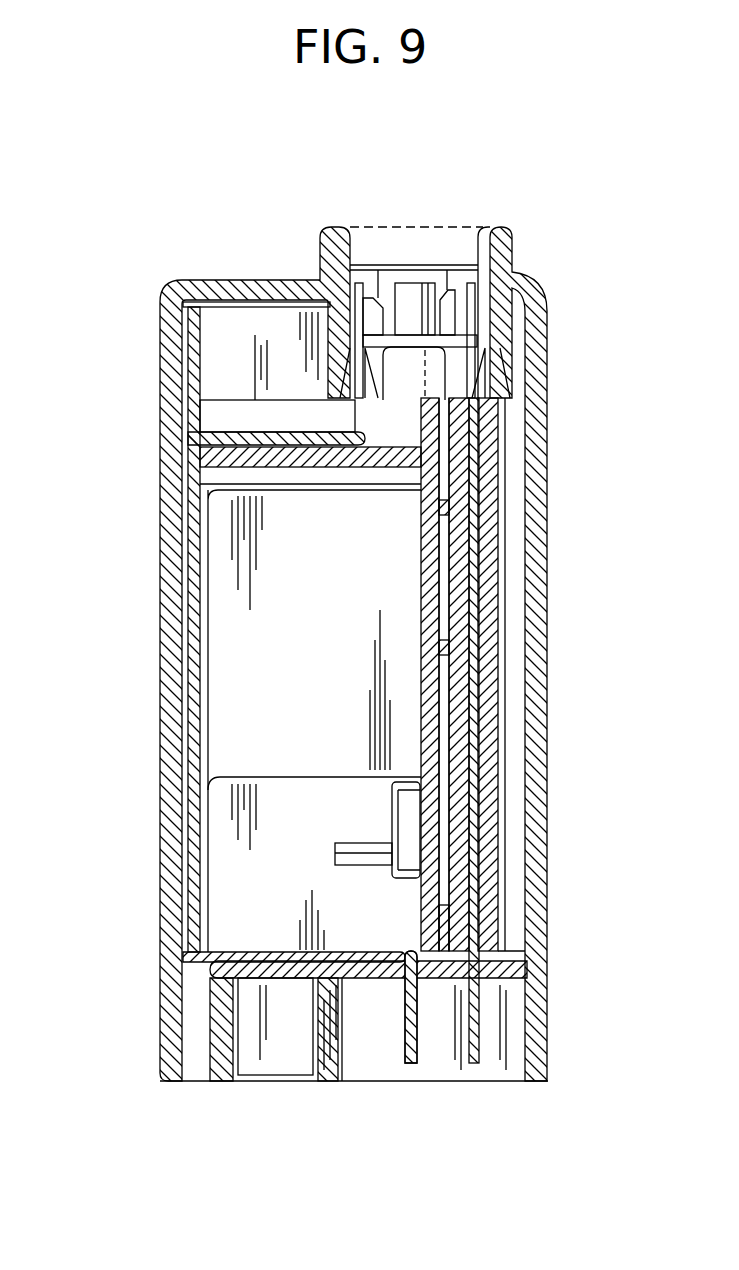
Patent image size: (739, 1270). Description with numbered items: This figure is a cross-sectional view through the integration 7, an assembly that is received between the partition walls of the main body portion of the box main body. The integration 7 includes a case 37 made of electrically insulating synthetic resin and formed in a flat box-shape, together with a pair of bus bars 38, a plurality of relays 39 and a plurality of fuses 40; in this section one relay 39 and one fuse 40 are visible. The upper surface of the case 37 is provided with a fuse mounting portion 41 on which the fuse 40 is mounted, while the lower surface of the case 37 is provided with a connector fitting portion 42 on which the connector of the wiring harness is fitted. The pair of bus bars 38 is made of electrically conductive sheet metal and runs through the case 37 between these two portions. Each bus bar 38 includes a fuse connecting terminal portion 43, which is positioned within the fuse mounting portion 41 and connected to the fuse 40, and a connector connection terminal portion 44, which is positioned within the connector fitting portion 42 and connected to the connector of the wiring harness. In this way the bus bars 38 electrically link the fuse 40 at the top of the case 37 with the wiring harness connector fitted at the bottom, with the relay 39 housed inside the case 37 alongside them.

The integration 7 is at (339, 184).
The case 37 is at (548, 697).
The bus bar 38 is at (222, 433).
The relay 39 is at (247, 627).
The fuse 40 is at (410, 227).
The fuse mounting portion 41 is at (512, 251).
The connector fitting portion 42 is at (548, 1053).
The fuse connecting terminal portion 43 is at (358, 365).
The connector connection terminal portion 44 is at (411, 1063).